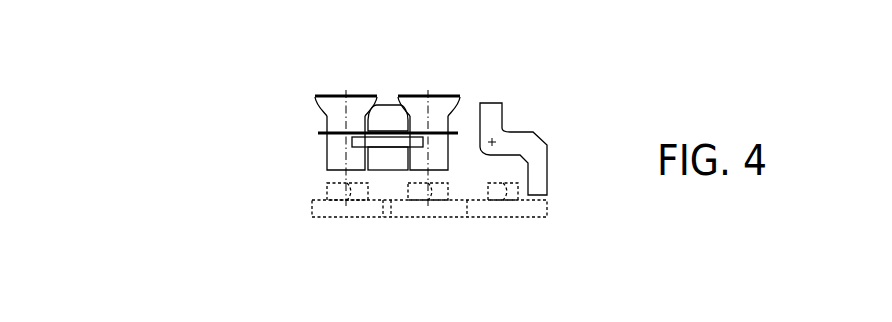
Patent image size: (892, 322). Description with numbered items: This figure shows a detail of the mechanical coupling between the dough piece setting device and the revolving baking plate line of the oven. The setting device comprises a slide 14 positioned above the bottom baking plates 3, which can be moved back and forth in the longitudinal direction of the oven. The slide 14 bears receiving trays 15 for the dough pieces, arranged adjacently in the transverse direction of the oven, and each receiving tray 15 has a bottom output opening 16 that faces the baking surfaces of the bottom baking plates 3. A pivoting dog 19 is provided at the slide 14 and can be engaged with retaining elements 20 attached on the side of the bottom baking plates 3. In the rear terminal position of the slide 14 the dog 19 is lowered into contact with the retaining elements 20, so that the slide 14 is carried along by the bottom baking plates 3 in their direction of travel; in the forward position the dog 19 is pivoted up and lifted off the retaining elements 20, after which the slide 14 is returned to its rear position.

The bottom baking plate 3 is at (537, 205).
The slide 14 is at (388, 115).
The receiving tray 15 is at (308, 96).
The bottom output opening 16 is at (337, 170).
The pivoting dog 19 is at (495, 112).
The retaining element 20 is at (517, 182).